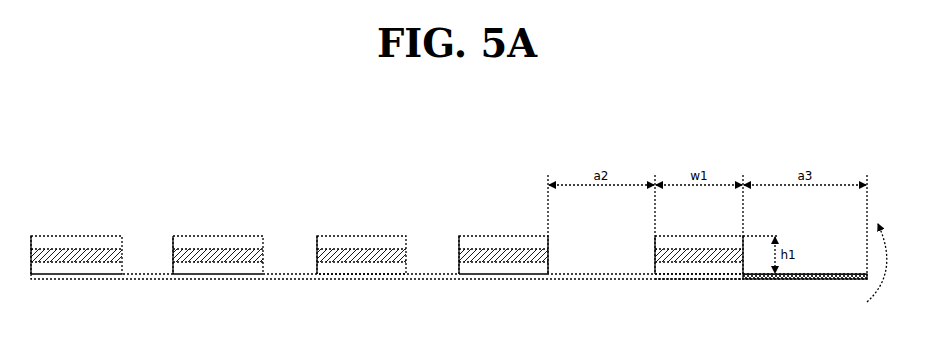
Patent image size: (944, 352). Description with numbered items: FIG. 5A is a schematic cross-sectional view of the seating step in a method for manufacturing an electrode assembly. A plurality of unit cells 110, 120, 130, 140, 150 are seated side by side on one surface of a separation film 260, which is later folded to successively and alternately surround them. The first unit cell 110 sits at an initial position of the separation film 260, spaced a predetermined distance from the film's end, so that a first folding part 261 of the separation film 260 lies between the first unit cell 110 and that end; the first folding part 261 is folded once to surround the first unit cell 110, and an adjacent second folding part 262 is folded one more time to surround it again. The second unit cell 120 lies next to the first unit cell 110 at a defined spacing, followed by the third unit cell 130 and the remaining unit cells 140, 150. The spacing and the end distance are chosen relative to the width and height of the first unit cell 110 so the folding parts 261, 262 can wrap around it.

The first unit cell 110 is at (651, 248).
The second unit cell 120 is at (508, 232).
The third unit cell 130 is at (366, 232).
The fourth unit cell 140 is at (224, 232).
The fifth unit cell 150 is at (88, 232).
The separation film 260 is at (155, 283).
The first folding part 261 is at (800, 281).
The second folding part 262 is at (686, 281).